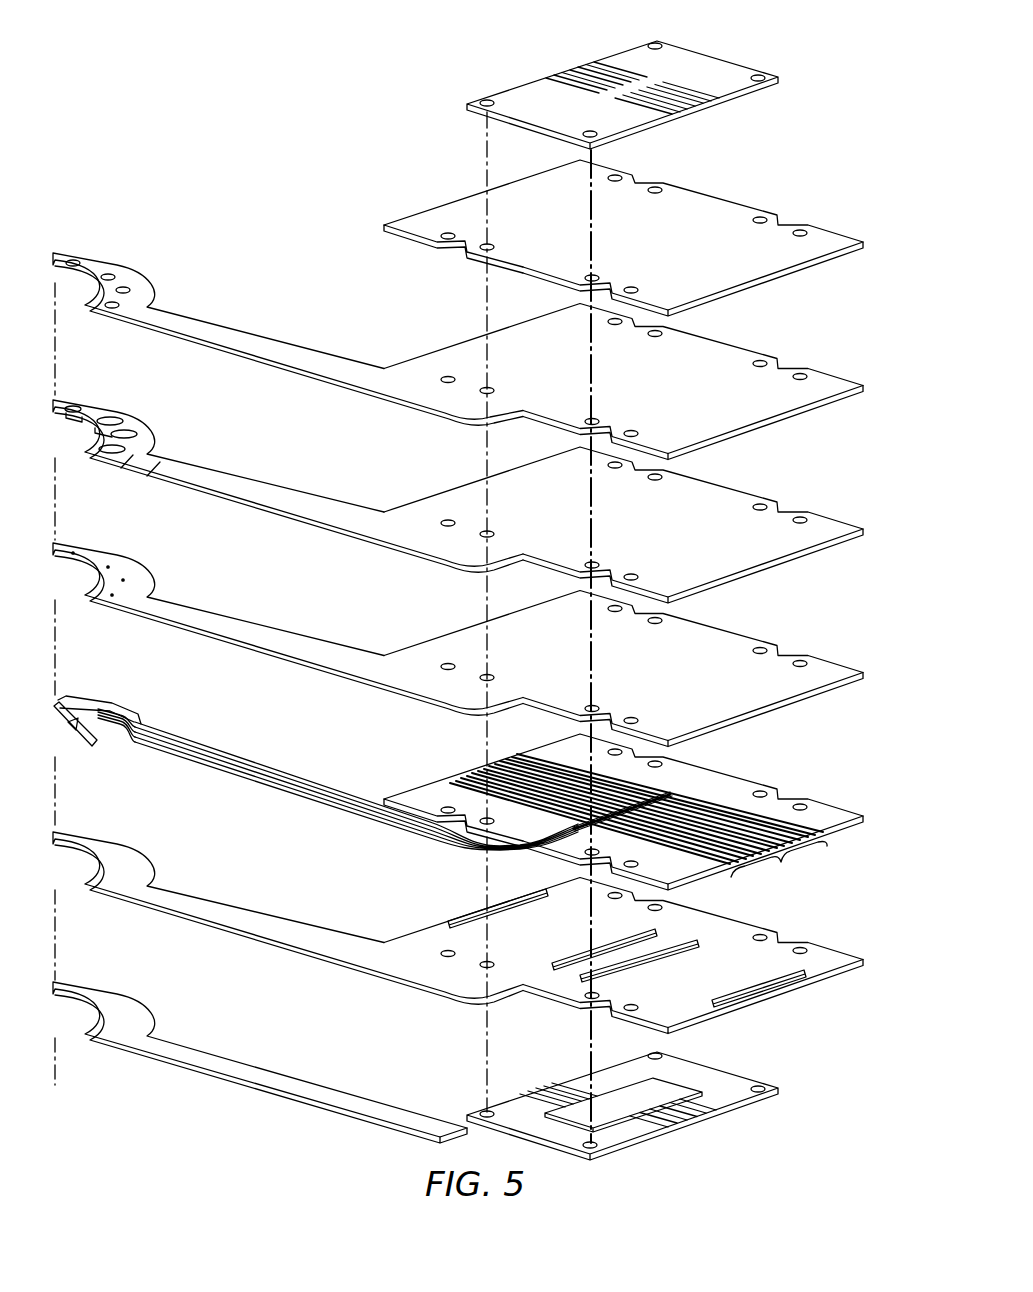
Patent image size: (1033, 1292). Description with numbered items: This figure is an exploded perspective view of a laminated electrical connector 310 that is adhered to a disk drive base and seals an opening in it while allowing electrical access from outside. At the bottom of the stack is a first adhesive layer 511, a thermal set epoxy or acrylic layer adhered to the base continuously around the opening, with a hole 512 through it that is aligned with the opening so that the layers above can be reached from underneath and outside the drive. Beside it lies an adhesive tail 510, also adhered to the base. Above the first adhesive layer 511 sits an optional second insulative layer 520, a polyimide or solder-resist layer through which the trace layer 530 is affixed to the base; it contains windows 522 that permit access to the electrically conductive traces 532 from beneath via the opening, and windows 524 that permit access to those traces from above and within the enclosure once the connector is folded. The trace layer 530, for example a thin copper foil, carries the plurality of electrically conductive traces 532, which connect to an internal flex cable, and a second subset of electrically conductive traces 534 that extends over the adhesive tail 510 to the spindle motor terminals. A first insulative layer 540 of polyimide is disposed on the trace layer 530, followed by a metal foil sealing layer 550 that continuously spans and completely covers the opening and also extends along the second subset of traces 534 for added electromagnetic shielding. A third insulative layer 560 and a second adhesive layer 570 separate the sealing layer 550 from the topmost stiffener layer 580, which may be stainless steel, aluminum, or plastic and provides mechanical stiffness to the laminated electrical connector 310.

The laminated electrical connector 310 is at (241, 126).
The adhesive tail 510 is at (246, 1076).
The first adhesive layer 511 is at (622, 1100).
The hole 512 is at (662, 1090).
The second insulative layer 520 is at (458, 933).
The windows 522 is at (574, 960).
The windows 524 is at (472, 916).
The trace layer 530 is at (451, 799).
The electrically conductive traces 532 is at (638, 828).
The second subset of electrically conductive traces 534 is at (84, 734).
The first insulative layer 540 is at (247, 645).
The metal foil sealing layer 550 is at (247, 502).
The third insulative layer 560 is at (247, 358).
The second adhesive layer 570 is at (443, 203).
The stiffener layer 580 is at (721, 56).